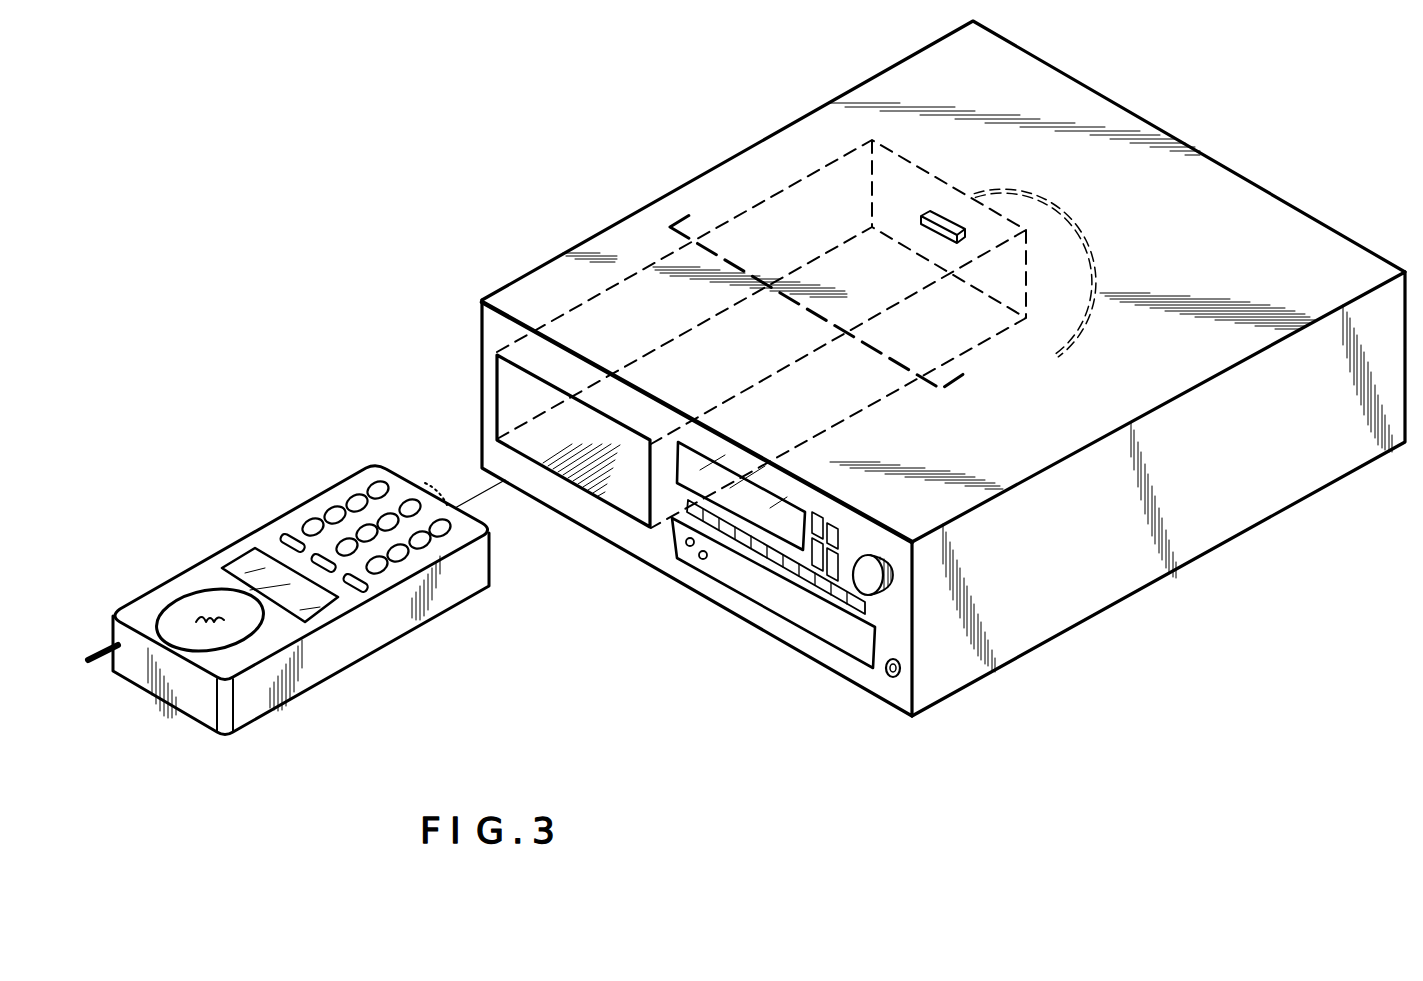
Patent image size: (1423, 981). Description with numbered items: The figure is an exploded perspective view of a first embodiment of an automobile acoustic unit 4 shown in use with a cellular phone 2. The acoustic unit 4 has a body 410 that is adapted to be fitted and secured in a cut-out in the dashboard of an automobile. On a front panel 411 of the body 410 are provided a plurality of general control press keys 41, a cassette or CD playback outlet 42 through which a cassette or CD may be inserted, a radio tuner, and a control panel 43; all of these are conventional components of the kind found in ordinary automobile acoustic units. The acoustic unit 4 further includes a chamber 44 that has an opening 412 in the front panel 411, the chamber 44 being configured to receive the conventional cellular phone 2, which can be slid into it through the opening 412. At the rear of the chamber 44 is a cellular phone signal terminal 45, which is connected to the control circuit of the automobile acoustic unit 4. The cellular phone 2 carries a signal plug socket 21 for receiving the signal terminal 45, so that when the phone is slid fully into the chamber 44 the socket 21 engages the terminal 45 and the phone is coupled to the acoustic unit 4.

The cellular phone 2 is at (380, 687).
The signal plug socket 21 is at (422, 493).
The automobile acoustic unit 4 is at (617, 143).
The general control press keys 41 is at (890, 606).
The cassette or CD playback outlet 42 is at (762, 505).
The control panel 43 is at (836, 634).
The chamber 44 is at (631, 492).
The cellular phone signal terminal 45 is at (930, 212).
The body 410 is at (1214, 198).
The front panel 411 is at (564, 506).
The opening 412 is at (497, 391).